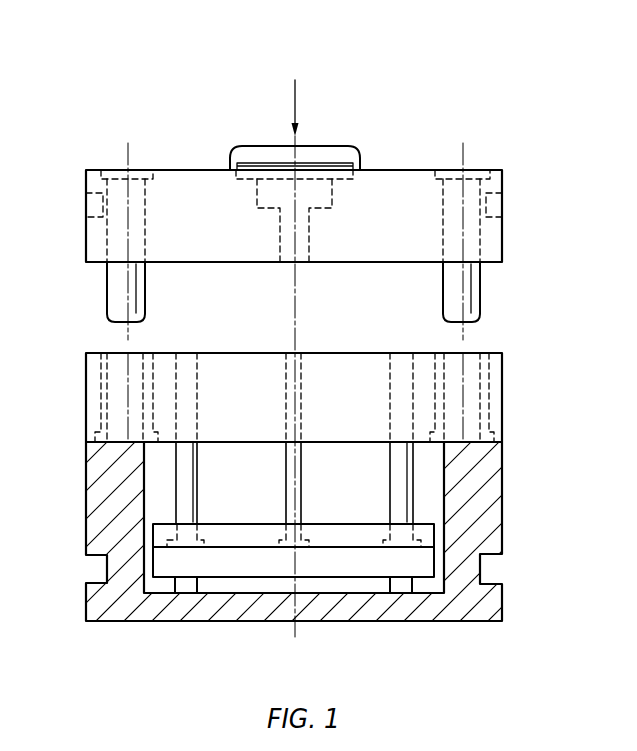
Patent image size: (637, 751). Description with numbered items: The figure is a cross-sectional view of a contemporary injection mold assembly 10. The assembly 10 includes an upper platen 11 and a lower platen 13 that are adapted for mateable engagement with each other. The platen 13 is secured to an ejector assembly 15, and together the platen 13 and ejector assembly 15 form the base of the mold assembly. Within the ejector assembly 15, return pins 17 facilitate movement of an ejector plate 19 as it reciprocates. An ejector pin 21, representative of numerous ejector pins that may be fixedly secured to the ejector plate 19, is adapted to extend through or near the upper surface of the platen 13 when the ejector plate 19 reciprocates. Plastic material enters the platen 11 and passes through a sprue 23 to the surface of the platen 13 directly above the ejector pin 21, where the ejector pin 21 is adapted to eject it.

The injection mold assembly 10 is at (73, 588).
The platen 11 is at (262, 179).
The platen 13 is at (503, 383).
The ejector assembly 15 is at (318, 487).
The return pins 17 is at (213, 450).
The ejector plate 19 is at (158, 589).
The ejector pin 21 is at (286, 483).
The sprue 23 is at (302, 243).